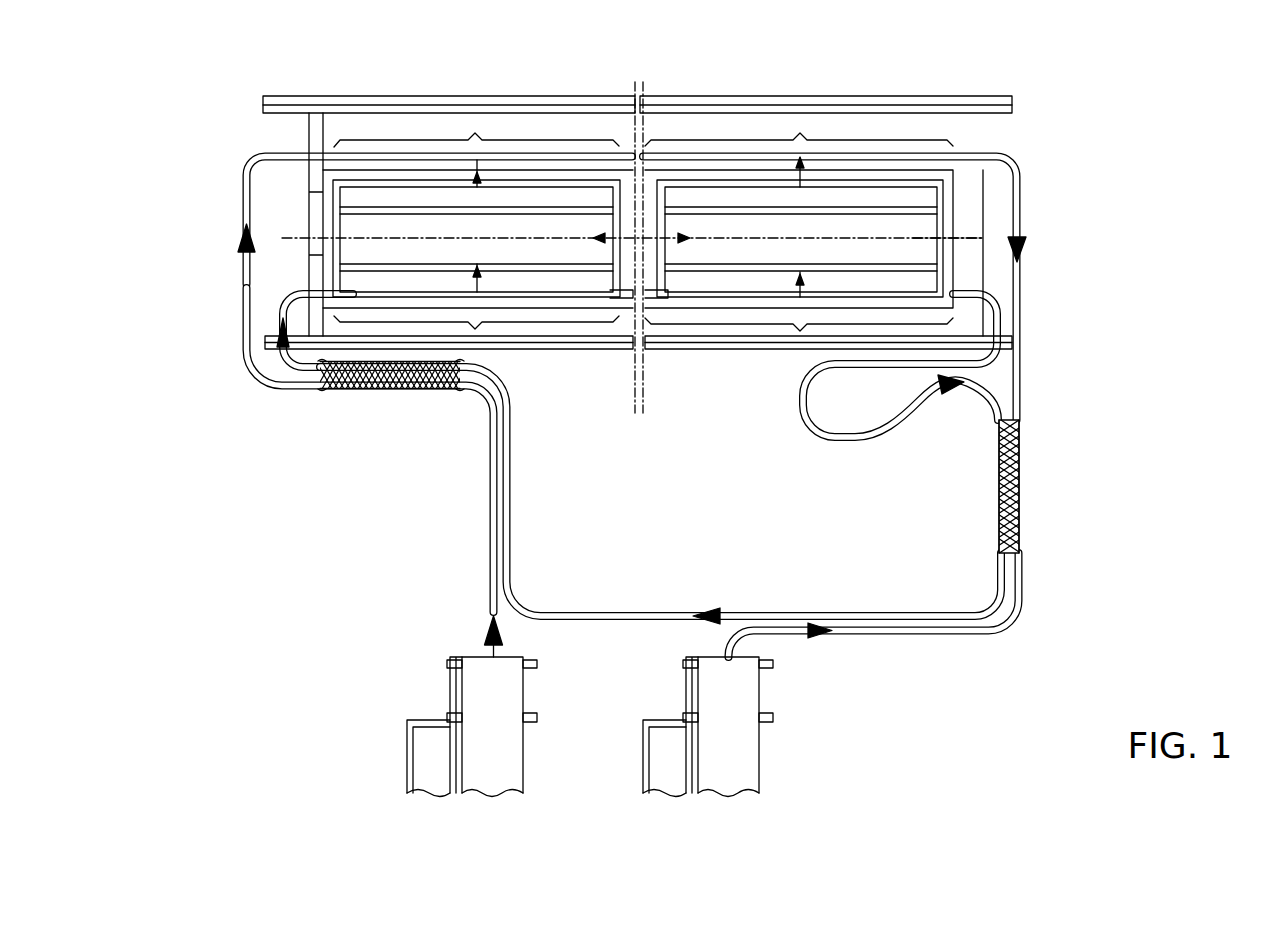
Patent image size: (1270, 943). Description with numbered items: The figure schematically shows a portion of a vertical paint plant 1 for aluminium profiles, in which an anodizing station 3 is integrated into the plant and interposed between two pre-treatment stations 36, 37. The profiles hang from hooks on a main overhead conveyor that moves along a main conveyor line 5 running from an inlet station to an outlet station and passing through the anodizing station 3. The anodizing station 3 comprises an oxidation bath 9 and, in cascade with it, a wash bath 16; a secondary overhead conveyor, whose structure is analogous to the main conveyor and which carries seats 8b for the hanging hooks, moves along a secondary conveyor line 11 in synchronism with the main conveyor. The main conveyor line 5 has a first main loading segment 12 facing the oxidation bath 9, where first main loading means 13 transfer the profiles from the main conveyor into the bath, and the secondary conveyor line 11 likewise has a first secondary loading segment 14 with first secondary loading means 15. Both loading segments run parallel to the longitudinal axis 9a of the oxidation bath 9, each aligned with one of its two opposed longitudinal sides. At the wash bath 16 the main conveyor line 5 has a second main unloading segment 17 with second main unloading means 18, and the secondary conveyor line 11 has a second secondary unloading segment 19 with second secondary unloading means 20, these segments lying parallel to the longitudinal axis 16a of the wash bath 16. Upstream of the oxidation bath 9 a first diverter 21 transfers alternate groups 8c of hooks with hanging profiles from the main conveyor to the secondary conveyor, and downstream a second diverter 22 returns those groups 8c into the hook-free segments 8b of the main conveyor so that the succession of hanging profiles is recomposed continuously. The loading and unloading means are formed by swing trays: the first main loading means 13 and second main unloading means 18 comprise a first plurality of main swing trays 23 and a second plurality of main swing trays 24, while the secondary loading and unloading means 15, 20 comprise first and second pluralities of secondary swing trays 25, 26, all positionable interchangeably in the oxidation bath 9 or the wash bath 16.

The vertical paint plant 1 is at (205, 613).
The anodizing station 3 is at (382, 531).
The main conveyor line 5 is at (493, 515).
The seats 8b is at (243, 197).
The alternate groups of hooks 8c is at (427, 170).
The oxidation bath 9 is at (412, 218).
The longitudinal axis of the oxidation bath 9a is at (570, 237).
The secondary conveyor line 11 is at (505, 498).
The first main loading segment 12 is at (477, 134).
The first main loading means 13 is at (360, 185).
The first secondary loading segment 14 is at (474, 327).
The first secondary loading means 15 is at (408, 296).
The wash bath 16 is at (878, 197).
The longitudinal axis of the wash bath 16a is at (913, 238).
The second main unloading segment 17 is at (801, 134).
The second main unloading means 18 is at (690, 190).
The second secondary unloading segment 19 is at (800, 330).
The second secondary unloading means 20 is at (703, 298).
The first diverter 21 is at (368, 408).
The second diverter 22 is at (1045, 490).
The first plurality of main swing trays 23 is at (387, 207).
The second plurality of main swing trays 24 is at (721, 210).
The first plurality of secondary swing trays 25 is at (372, 272).
The second plurality of secondary swing trays 26 is at (750, 273).
The pre-treatment station 36 is at (453, 697).
The pre-treatment station 37 is at (768, 693).